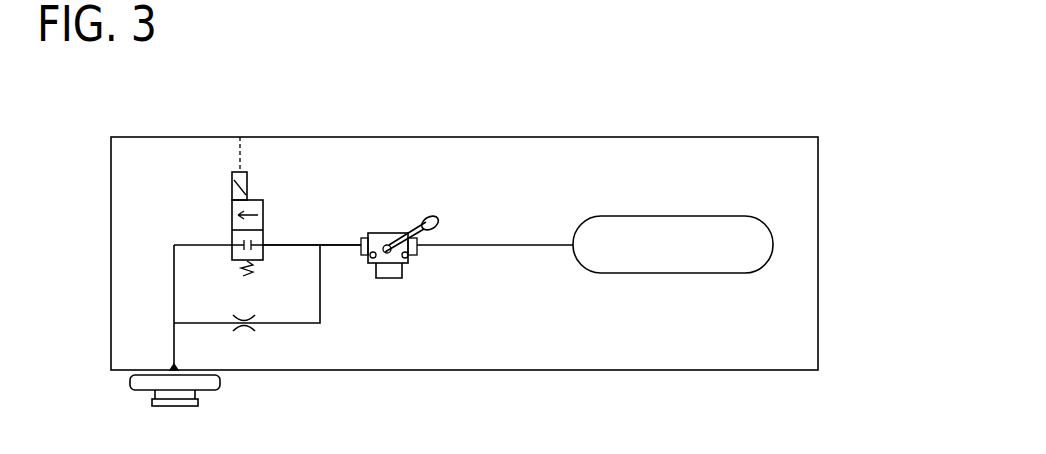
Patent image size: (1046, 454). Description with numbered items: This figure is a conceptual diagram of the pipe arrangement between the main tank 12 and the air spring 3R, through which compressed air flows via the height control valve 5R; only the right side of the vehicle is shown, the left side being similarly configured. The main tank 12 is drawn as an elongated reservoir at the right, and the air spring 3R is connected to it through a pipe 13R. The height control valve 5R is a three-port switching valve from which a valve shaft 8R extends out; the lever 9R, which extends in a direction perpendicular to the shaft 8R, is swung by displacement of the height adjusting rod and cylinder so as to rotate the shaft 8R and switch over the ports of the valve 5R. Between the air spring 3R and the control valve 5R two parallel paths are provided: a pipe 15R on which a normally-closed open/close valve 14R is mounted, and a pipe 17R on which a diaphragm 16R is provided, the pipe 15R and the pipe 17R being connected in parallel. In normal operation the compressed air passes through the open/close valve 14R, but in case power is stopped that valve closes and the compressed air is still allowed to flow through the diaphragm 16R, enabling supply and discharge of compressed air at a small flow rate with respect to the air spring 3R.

The air spring 3R is at (220, 382).
The height control valve 5R is at (380, 232).
The valve shaft 8R is at (398, 265).
The lever 9R is at (418, 222).
The main tank 12 is at (672, 216).
The pipe 13R is at (522, 244).
The normally-closed open/close valve 14R is at (263, 208).
The pipe 15R is at (302, 244).
The diaphragm 16R is at (243, 318).
The pipe 17R is at (300, 325).